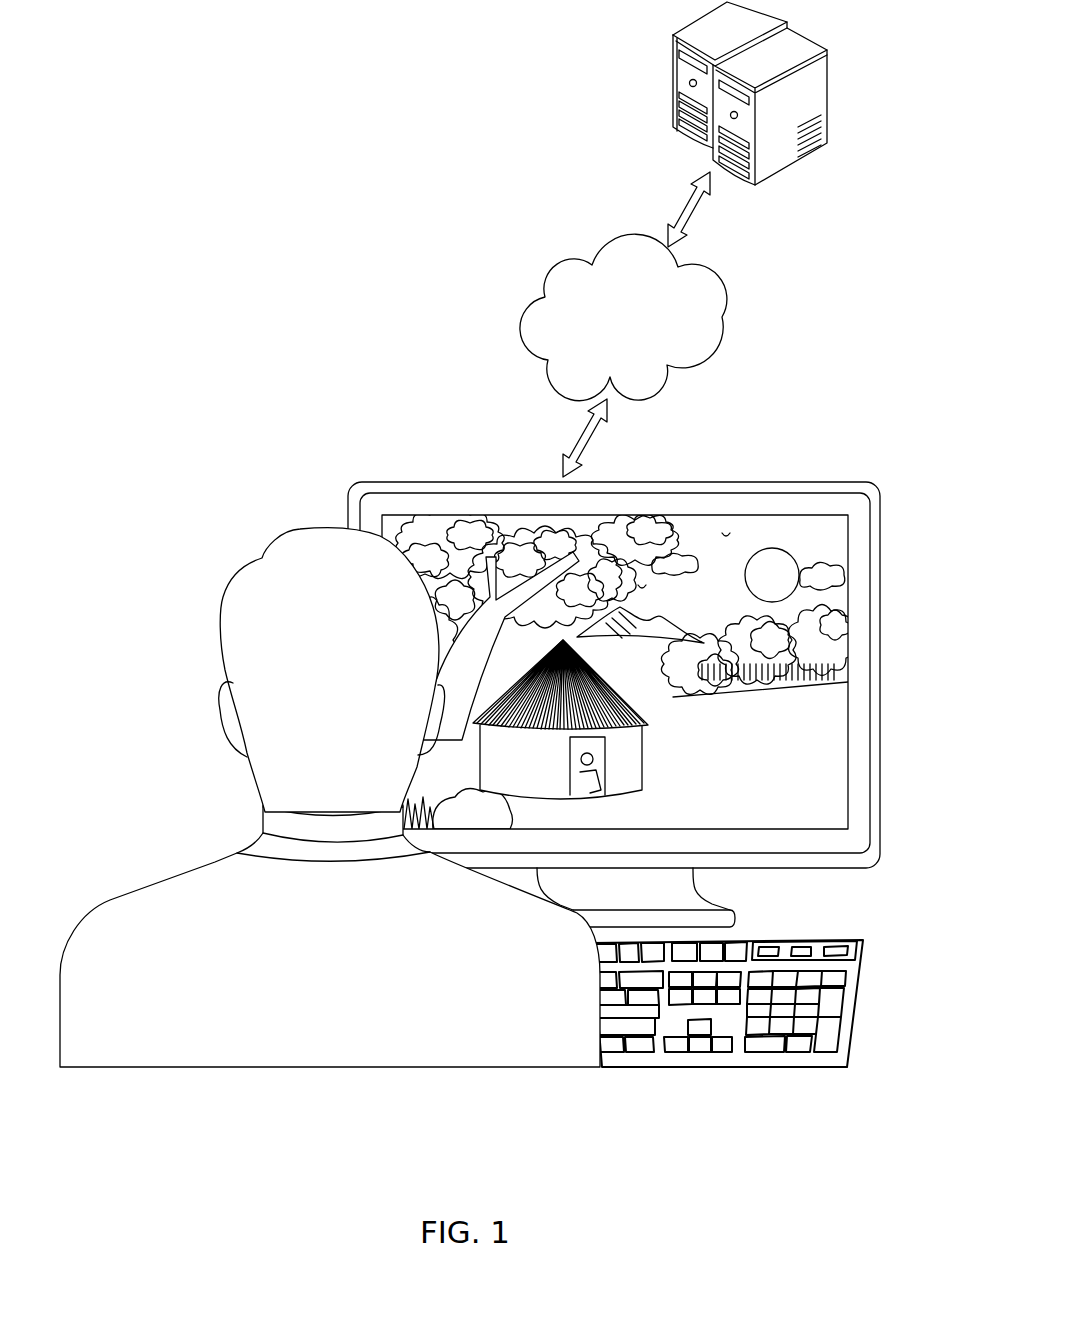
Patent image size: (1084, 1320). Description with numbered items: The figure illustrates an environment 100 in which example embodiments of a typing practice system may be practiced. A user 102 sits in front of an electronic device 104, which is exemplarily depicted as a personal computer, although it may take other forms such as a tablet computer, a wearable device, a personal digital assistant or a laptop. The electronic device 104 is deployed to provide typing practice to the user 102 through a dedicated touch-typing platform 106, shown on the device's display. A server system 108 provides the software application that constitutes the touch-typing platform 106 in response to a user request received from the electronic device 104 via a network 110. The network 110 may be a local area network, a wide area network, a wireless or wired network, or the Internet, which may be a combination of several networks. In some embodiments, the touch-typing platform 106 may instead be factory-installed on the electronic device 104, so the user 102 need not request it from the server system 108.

The environment 100 is at (880, 1135).
The user 102 is at (217, 862).
The electronic device 104 is at (725, 482).
The touch-typing platform 106 is at (799, 823).
The server system 108 is at (827, 92).
The network 110 is at (617, 352).